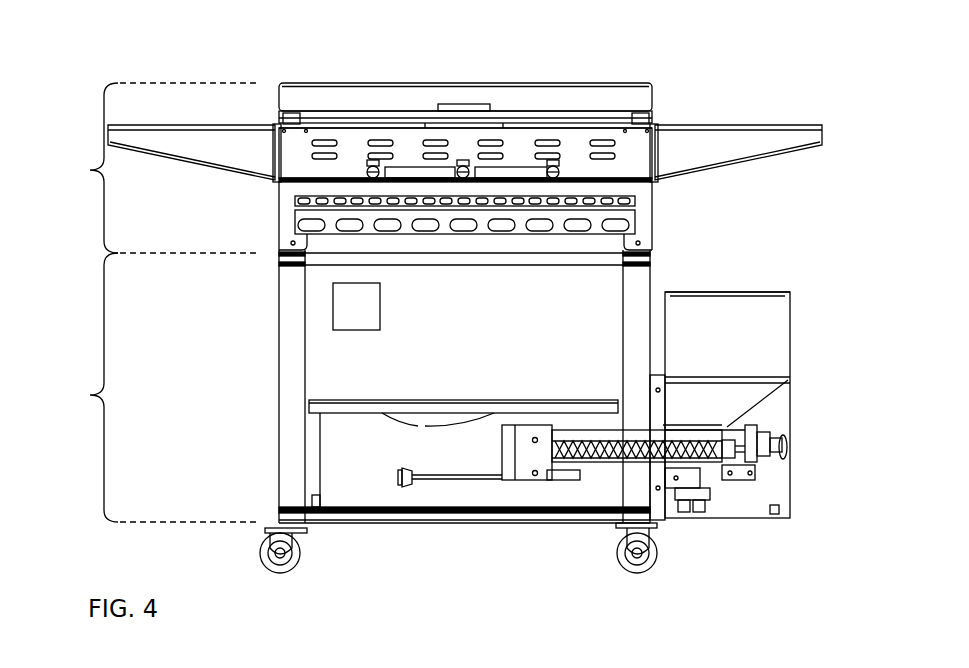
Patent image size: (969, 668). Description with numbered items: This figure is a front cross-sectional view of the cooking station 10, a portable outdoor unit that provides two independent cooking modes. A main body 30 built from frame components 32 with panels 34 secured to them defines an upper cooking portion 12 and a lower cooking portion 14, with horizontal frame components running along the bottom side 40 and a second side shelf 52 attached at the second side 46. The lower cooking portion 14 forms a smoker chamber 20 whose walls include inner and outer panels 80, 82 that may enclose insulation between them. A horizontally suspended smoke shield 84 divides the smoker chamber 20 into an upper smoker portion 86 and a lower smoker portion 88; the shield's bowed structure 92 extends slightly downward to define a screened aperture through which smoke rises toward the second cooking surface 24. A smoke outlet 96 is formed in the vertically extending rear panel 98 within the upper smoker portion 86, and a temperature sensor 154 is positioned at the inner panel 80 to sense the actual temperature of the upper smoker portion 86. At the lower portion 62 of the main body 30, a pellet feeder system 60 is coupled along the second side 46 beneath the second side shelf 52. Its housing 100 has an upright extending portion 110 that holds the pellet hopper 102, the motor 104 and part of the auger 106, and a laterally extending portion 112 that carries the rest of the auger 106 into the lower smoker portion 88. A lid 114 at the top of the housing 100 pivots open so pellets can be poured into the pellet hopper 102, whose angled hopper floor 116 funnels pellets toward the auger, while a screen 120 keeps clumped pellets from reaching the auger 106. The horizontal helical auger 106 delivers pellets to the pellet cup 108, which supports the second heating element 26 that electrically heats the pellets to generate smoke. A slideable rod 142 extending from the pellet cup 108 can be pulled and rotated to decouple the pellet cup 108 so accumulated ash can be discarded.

The cooking station 10 is at (797, 44).
The upper cooking portion 12 is at (151, 168).
The lower cooking portion 14 is at (151, 387).
The smoker chamber 20 is at (538, 310).
The second cooking surface 24 is at (492, 400).
The second heating element 26 is at (568, 482).
The main body 30 is at (655, 270).
The frame components 32 is at (655, 258).
The panels 34 is at (654, 311).
The bottom side 40 is at (546, 532).
The second side 46 is at (738, 238).
The second side shelf 52 is at (818, 124).
The pellet feeder system 60 is at (810, 550).
The lower portion 62 is at (276, 504).
The inner panel 80 is at (305, 329).
The outer panel 82 is at (279, 305).
The smoke shield 84 is at (490, 432).
The upper smoker portion 86 is at (330, 350).
The lower smoker portion 88 is at (330, 448).
The bowed structure 92 is at (386, 420).
The smoke outlet 96 is at (380, 305).
The rear panel 98 is at (410, 328).
The housing 100 is at (794, 328).
The pellet hopper 102 is at (789, 322).
The motor 104 is at (793, 470).
The auger 106 is at (610, 463).
The pellet cup 108 is at (520, 480).
The upright extending portion 110 is at (794, 462).
The laterally extending portion 112 is at (632, 425).
The lid 114 is at (772, 292).
The hopper floor 116 is at (760, 385).
The screen 120 is at (790, 382).
The slideable rod 142 is at (414, 480).
The temperature sensor 154 is at (666, 336).